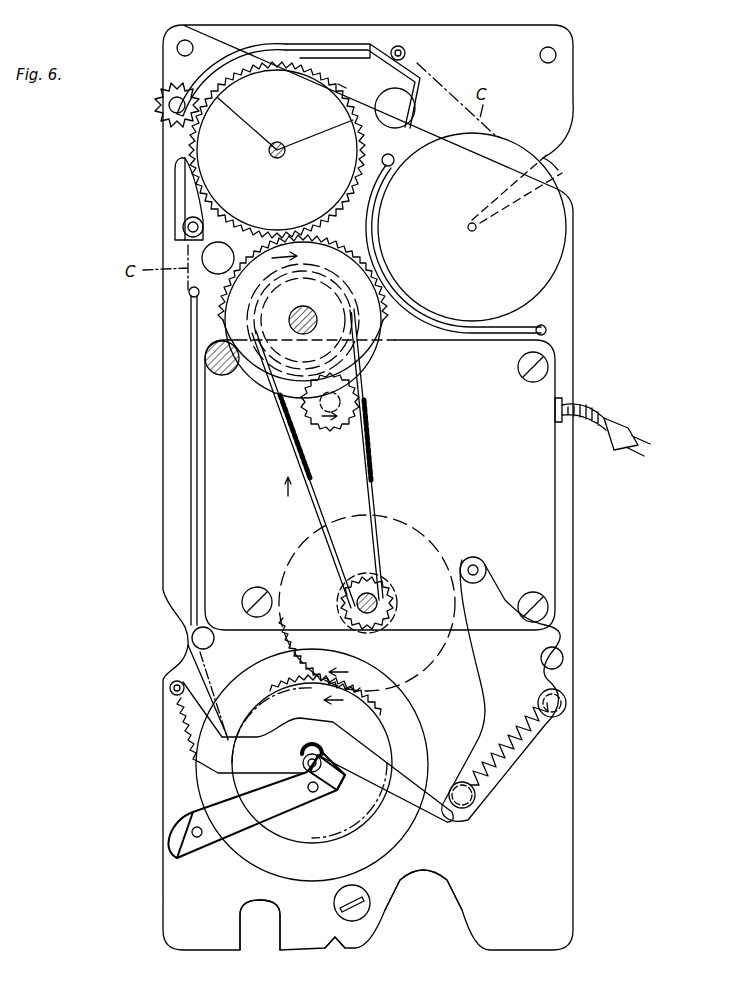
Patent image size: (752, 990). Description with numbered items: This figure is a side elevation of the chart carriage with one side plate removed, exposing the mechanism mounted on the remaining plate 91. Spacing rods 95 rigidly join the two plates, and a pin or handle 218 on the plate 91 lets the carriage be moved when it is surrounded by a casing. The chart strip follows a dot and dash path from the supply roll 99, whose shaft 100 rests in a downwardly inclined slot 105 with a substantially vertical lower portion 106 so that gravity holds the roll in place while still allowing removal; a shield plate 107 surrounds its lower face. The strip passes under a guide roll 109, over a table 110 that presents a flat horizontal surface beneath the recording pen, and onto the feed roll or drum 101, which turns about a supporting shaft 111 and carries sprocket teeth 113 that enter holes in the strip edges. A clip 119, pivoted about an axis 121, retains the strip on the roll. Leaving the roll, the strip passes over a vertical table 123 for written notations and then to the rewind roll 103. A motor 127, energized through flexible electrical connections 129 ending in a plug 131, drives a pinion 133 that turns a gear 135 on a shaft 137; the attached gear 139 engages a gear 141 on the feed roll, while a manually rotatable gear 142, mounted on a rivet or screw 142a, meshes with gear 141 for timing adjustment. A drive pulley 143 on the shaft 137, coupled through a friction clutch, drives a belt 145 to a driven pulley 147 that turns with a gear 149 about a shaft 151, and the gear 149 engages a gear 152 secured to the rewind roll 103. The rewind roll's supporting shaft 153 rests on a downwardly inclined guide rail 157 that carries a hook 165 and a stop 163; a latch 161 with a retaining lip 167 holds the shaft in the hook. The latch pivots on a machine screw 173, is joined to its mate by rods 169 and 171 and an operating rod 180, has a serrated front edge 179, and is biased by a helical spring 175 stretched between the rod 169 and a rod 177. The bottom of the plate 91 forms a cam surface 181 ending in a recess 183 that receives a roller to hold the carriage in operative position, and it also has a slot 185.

The plate 91 is at (560, 44).
The pin or handle 218 is at (177, 48).
The gear 142 is at (156, 105).
The rivet or screw 142a is at (231, 80).
The table 110 is at (390, 48).
The guide roll 109 is at (403, 50).
The feed roll or drum 101 is at (283, 113).
The supporting shaft 111 is at (281, 140).
The sprocket teeth 113 is at (343, 87).
The clip 119 is at (176, 183).
The axis 121 is at (182, 226).
The vertical table 123 is at (190, 491).
The motor 127 is at (545, 520).
The electrical connections 129 is at (585, 416).
The plug 131 is at (640, 443).
The supply roll 99 is at (558, 180).
The shaft 100 is at (473, 232).
The lower portion 106 is at (465, 230).
The slot 105 is at (552, 160).
The shield plate 107 is at (430, 322).
The gear 135 is at (376, 369).
The gear 139 is at (352, 252).
The gear 141 is at (270, 222).
The shaft 137 is at (313, 302).
The drive pulley 143 is at (244, 381).
The pinion 133 is at (336, 424).
The belt 145 is at (373, 468).
The driven pulley 147 is at (366, 585).
The gear 149 is at (285, 632).
The shaft 151 is at (380, 604).
The rewind roll 103 is at (396, 834).
The gear 152 is at (288, 681).
The spacing rod 95 is at (192, 638).
The latch 161 is at (180, 722).
The operating rod 180 is at (170, 688).
The serrated front edge 179 is at (186, 736).
The guide rail 157 is at (282, 806).
The stop 163 is at (194, 812).
The supporting shaft 153 is at (333, 782).
The hook 165 is at (327, 750).
The retaining lip 167 is at (303, 764).
The rod 171 is at (565, 659).
The machine screw 173 is at (487, 571).
The rod 177 is at (567, 704).
The rod 169 is at (470, 803).
The helical spring 175 is at (512, 752).
The cam surface 181 is at (393, 910).
The recess 183 is at (336, 942).
The slot 185 is at (241, 930).